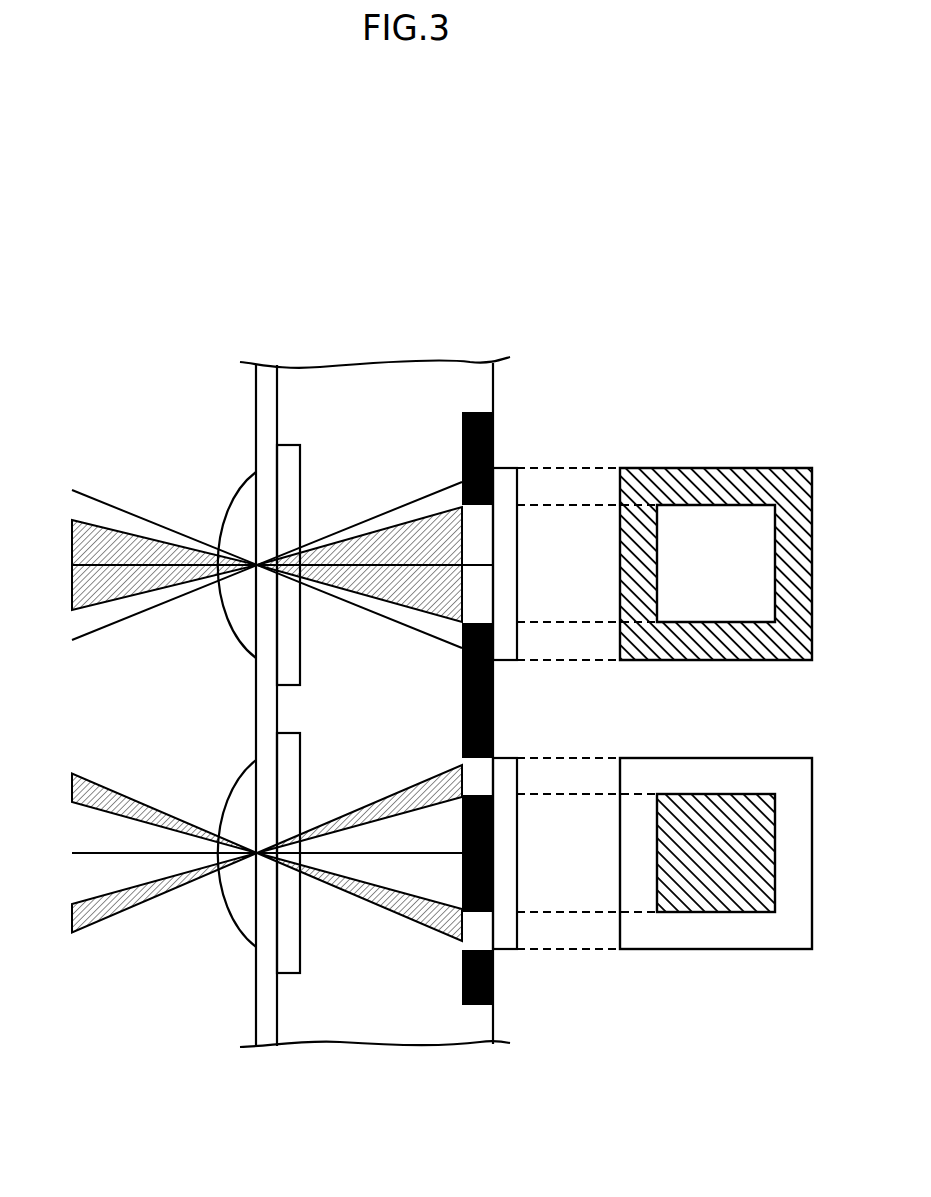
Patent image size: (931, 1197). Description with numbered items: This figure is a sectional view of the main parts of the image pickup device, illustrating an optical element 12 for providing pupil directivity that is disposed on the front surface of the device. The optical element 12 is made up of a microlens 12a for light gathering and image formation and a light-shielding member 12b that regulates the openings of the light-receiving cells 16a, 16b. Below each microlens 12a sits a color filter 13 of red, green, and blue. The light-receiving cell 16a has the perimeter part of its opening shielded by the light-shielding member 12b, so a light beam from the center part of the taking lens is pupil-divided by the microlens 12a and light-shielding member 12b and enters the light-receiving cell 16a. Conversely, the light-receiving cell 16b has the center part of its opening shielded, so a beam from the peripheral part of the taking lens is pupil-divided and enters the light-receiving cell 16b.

The optical element 12 is at (357, 290).
The microlens 12a is at (242, 476).
The light-shielding member 12b is at (480, 412).
The color filter 13 is at (300, 456).
The light-receiving cell 16a is at (517, 562).
The light-receiving cell 16b is at (517, 850).